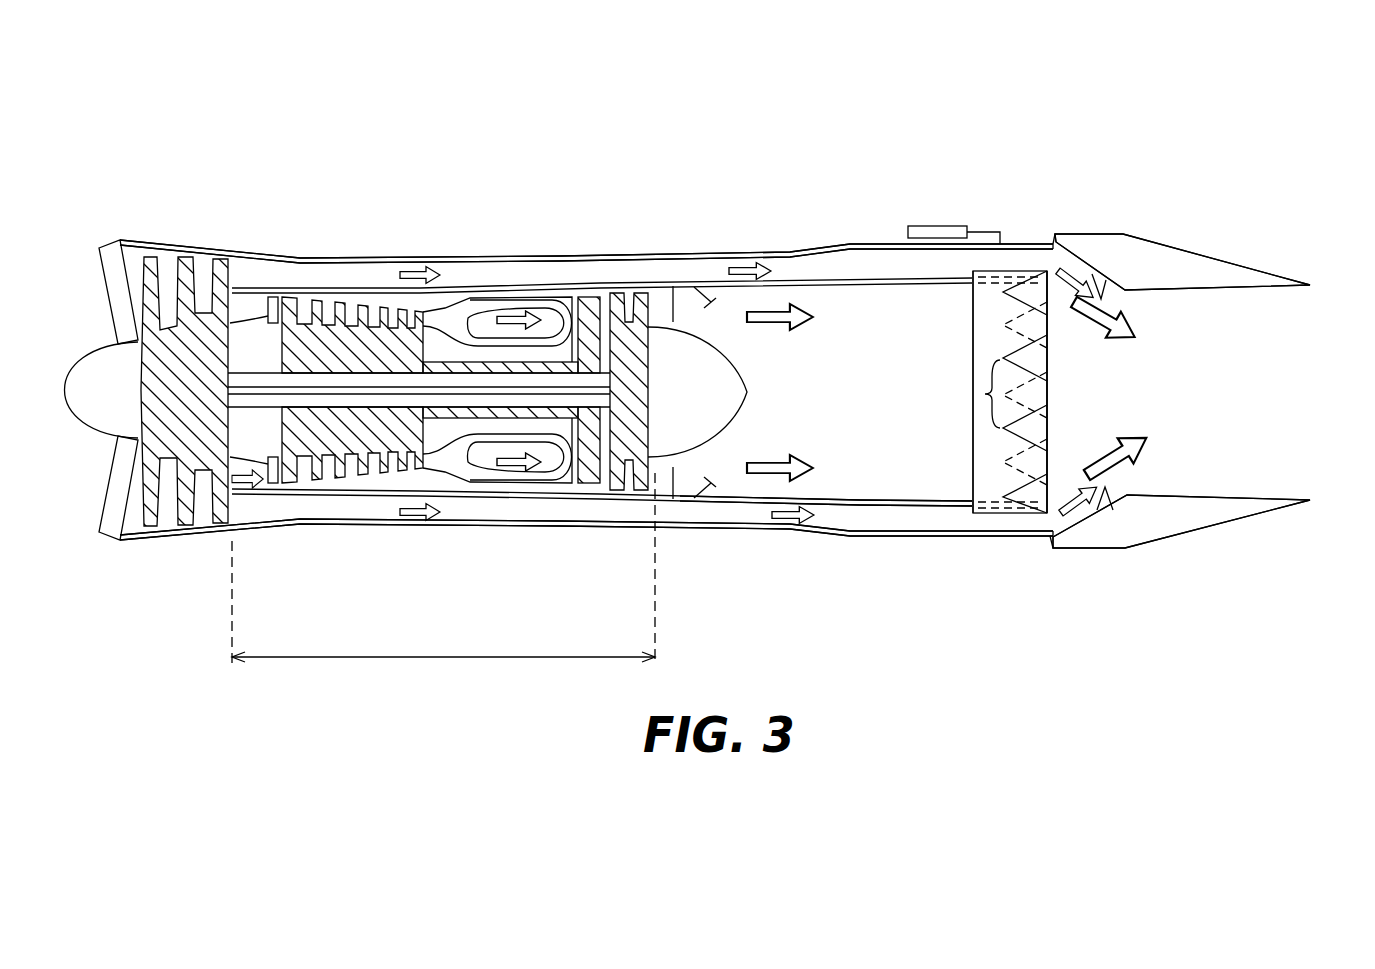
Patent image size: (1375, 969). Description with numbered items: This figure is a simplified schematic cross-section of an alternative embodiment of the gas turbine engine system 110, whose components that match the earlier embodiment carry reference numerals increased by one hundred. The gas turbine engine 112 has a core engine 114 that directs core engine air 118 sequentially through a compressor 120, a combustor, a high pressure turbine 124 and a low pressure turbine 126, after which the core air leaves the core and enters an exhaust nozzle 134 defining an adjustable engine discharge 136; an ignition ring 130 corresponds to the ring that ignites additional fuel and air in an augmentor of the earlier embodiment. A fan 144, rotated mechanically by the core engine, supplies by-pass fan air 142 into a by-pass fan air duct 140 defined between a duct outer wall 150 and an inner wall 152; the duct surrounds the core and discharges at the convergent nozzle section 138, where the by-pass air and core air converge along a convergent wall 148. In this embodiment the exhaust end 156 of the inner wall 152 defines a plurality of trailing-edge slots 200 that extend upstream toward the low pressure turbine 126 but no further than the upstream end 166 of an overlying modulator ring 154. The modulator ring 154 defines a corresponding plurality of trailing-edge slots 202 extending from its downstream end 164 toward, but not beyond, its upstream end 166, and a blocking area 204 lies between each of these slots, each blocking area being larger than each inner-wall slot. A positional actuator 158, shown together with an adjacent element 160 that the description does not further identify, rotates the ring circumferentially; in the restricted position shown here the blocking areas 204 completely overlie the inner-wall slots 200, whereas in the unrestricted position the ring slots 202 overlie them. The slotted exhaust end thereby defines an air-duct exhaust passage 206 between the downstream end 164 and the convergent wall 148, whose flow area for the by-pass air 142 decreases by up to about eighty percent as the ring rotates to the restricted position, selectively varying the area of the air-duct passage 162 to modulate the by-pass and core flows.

The gas turbine engine system 110 is at (1003, 135).
The gas turbine engine 112 is at (404, 228).
The core engine 114 is at (375, 657).
The core engine air 118 is at (525, 314).
The compressor 120 is at (373, 259).
The high pressure turbine 124 is at (602, 490).
The low pressure turbine 126 is at (655, 285).
The ignition ring 130 is at (688, 500).
The exhaust nozzle 134 is at (1207, 253).
The adjustable engine discharge 136 is at (1257, 375).
The convergent nozzle section 138 is at (1080, 275).
The by-pass fan air duct 140 is at (345, 528).
The by-pass fan air 142 is at (448, 262).
The fan 144 is at (141, 290).
The convergent wall 148 is at (1106, 292).
The duct outer wall 150 is at (610, 257).
The inner wall 152 is at (850, 502).
The modulator ring 154 is at (970, 440).
The exhaust end 156 is at (1052, 375).
The positional actuator 158 is at (927, 226).
The controller 160 is at (988, 232).
The air-duct passage 162 is at (1015, 538).
The downstream end 164 is at (1040, 518).
The upstream end 166 is at (970, 467).
The trailing-edge slots 200 is at (1005, 322).
The trailing-edge slots 202 is at (1010, 290).
The blocking area 204 is at (985, 394).
The air-duct exhaust passage 206 is at (1060, 402).